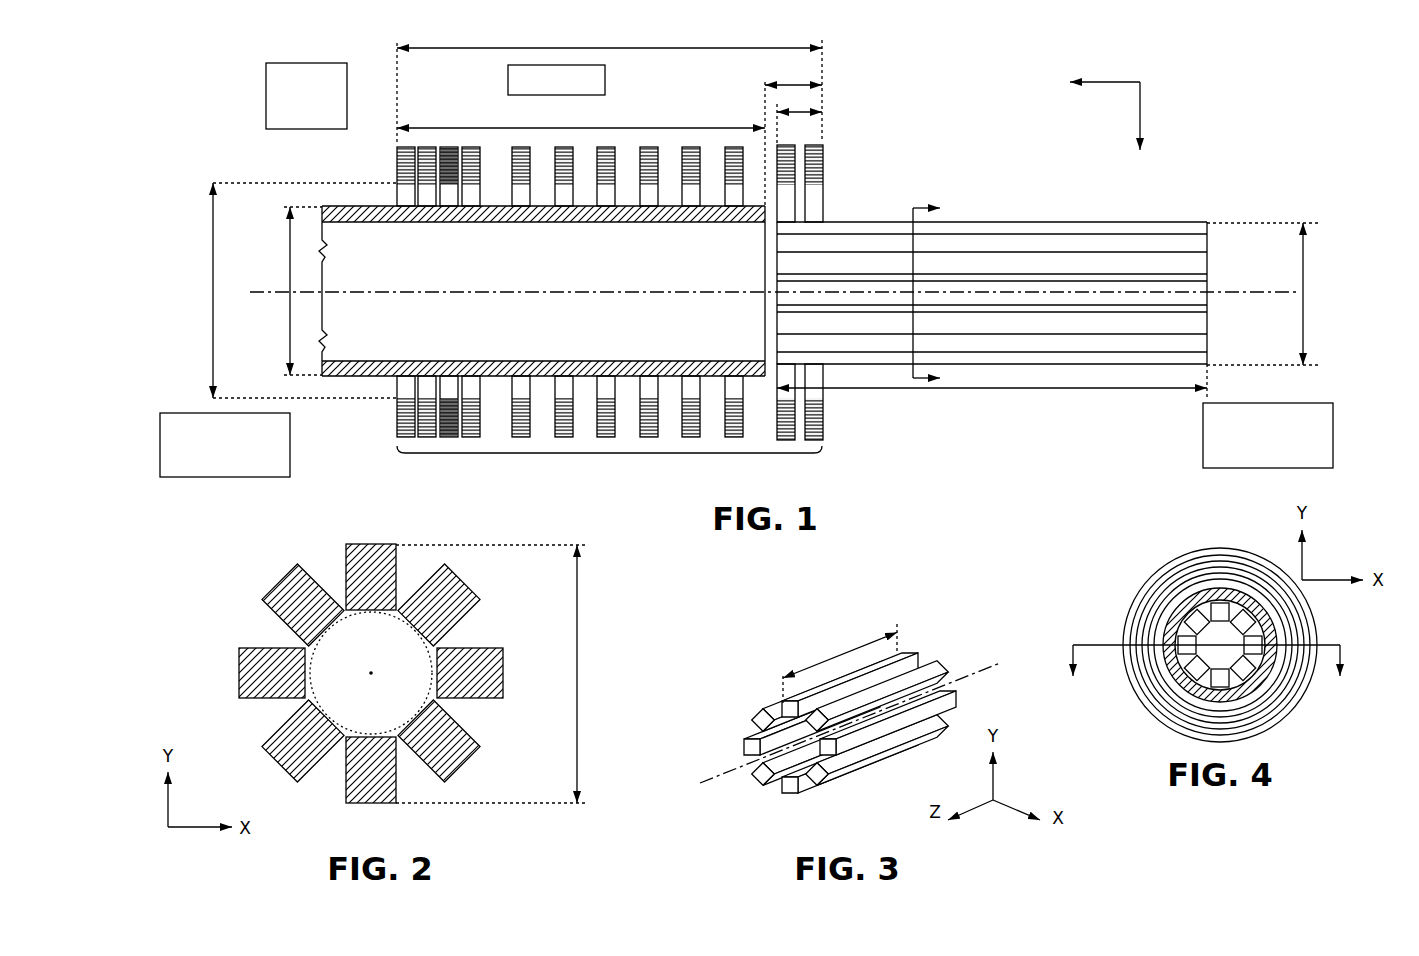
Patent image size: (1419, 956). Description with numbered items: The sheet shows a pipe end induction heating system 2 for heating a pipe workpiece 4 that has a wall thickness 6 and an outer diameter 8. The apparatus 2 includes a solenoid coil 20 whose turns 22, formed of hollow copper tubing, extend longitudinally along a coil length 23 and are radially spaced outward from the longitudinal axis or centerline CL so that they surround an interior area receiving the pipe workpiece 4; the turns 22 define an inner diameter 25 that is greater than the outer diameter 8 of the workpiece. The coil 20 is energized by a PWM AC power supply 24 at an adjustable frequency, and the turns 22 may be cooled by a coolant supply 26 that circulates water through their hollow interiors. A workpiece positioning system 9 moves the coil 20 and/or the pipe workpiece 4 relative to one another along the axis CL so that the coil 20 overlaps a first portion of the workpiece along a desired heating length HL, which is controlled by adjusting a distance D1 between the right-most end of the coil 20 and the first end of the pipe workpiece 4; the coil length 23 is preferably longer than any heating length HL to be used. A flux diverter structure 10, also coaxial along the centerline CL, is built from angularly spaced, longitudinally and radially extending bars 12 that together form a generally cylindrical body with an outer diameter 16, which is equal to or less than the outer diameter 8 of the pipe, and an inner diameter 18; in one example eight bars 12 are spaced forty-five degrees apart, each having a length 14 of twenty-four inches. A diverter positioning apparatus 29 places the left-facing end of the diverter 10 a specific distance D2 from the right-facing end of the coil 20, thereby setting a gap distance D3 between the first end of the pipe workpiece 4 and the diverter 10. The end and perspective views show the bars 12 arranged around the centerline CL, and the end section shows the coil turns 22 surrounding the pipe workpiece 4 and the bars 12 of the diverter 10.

In FIG. 1, the induction heating system 2 is at (231, 78).
In FIG. 4, the induction heating system 2 is at (1089, 555).
In FIG. 1, the pipe workpiece 4 is at (346, 206).
In FIG. 4, the pipe workpiece 4 is at (1195, 597).
In FIG. 1, the wall thickness 6 is at (347, 333).
In FIG. 1, the outer diameter 8 is at (290, 248).
In FIG. 1, the workpiece positioning system 9 is at (192, 413).
In FIG. 1, the flux diverter structure 10 is at (1016, 267).
In FIG. 2, the flux diverter structure 10 is at (370, 660).
In FIG. 3, the flux diverter structure 10 is at (852, 704).
In FIG. 1, the bars 12 is at (1207, 228).
In FIG. 2, the bars 12 is at (346, 556).
In FIG. 3, the bars 12 is at (753, 720).
In FIG. 4, the bars 12 is at (1243, 638).
In FIG. 1, the length 14 is at (995, 390).
In FIG. 3, the length 14 is at (845, 653).
In FIG. 1, the outer diameter 16 is at (1303, 276).
In FIG. 2, the outer diameter 16 is at (577, 677).
In FIG. 2, the inner diameter 18 is at (313, 697).
In FIG. 1, the solenoid coil 20 is at (610, 453).
In FIG. 1, the turns 22 is at (387, 160).
In FIG. 4, the turns 22 is at (1152, 620).
In FIG. 1, the coil length 23 is at (657, 48).
In FIG. 1, the PWM AC power supply 24 is at (266, 110).
In FIG. 1, the inner diameter 25 is at (213, 280).
In FIG. 1, the coolant supply 26 is at (508, 80).
In FIG. 1, the diverter positioning apparatus 29 is at (1203, 435).
In FIG. 1, the centerline CL is at (260, 292).
In FIG. 2, the centerline CL is at (368, 670).
In FIG. 3, the centerline CL is at (696, 786).
In FIG. 1, the heating length HL is at (580, 128).
In FIG. 1, the distance D1 is at (797, 85).
In FIG. 1, the distance D2 is at (800, 112).
In FIG. 1, the gap distance D3 is at (764, 388).